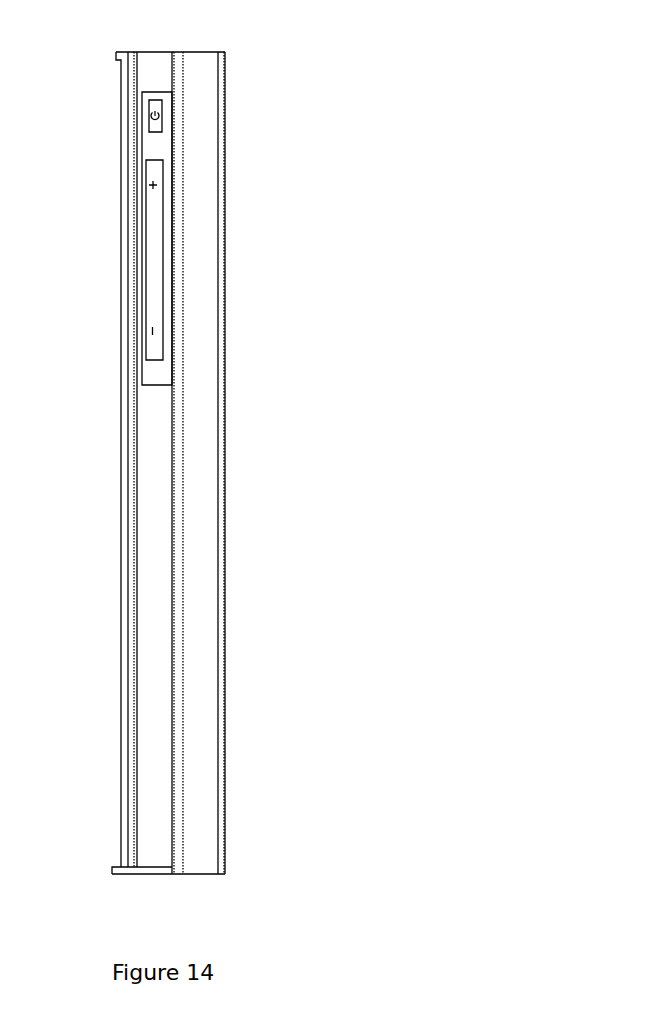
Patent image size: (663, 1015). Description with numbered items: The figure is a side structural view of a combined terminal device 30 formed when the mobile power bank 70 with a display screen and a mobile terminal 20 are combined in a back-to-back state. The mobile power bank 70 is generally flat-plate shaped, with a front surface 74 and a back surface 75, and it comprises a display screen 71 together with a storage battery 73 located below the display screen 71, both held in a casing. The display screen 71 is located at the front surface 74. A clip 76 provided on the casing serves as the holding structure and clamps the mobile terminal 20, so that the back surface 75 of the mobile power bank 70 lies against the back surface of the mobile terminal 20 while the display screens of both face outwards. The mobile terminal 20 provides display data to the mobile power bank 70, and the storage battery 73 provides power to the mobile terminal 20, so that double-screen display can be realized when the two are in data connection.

The combined terminal device 30 is at (57, 59).
The mobile terminal 20 is at (155, 423).
The mobile power bank 70 is at (205, 360).
The display screen 71 is at (222, 139).
The storage battery 73 is at (211, 213).
The front surface 74 is at (222, 139).
The back surface 75 is at (178, 583).
The clip 76 is at (112, 866).